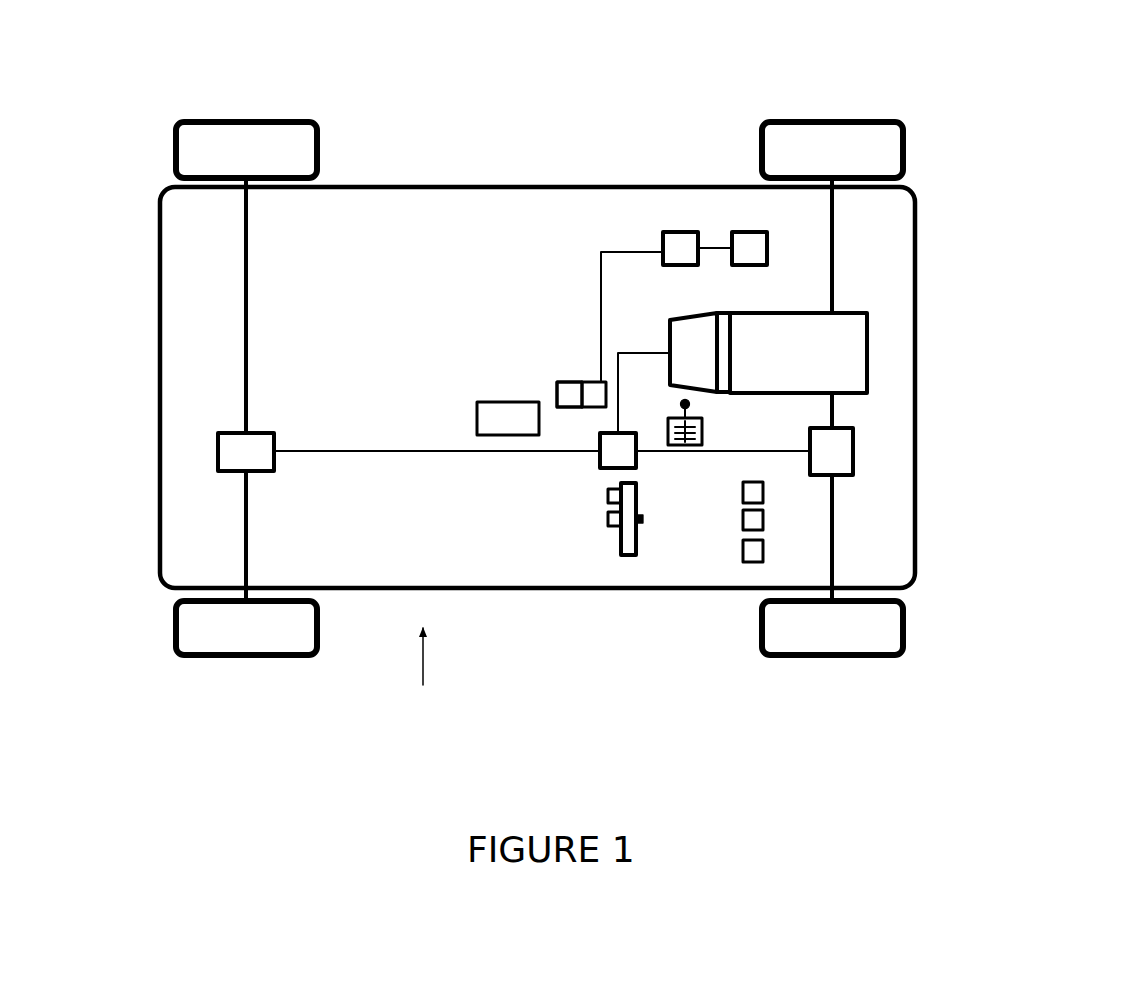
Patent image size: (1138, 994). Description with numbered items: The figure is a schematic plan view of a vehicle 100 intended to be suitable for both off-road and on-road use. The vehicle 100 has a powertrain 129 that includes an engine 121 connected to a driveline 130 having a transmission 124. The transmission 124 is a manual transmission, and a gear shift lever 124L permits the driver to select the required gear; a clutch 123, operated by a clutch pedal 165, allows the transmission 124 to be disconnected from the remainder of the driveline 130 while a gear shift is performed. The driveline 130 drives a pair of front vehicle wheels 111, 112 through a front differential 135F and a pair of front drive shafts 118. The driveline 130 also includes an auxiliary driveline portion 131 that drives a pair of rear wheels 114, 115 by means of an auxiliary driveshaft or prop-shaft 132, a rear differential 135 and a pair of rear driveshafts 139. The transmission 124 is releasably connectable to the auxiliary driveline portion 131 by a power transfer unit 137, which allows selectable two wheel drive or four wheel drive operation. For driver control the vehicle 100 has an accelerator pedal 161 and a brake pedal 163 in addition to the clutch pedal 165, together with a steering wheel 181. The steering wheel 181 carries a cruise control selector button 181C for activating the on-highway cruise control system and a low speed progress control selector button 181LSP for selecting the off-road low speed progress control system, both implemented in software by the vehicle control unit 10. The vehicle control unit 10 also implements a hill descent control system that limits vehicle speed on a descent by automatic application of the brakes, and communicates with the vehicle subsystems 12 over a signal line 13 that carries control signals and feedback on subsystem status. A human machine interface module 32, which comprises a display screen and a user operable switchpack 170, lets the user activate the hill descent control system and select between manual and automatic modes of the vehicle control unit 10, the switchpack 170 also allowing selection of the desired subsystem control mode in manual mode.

The vehicle 100 is at (1012, 147).
The vehicle control unit 10 is at (673, 232).
The vehicle subsystems 12 is at (743, 230).
The signal line 13 is at (717, 247).
The human machine interface module 32 is at (591, 382).
The user operable switchpack 170 is at (568, 382).
The front vehicle wheel 111 is at (880, 133).
The front vehicle wheel 112 is at (880, 645).
The rear wheel 114 is at (207, 133).
The rear wheel 115 is at (208, 643).
The front drive shafts 118 is at (832, 235).
The rear driveshafts 139 is at (246, 290).
The engine 121 is at (857, 357).
The clutch 123 is at (855, 350).
The transmission 124 is at (695, 333).
The gear shift lever 124L is at (837, 423).
The powertrain 129 is at (1012, 372).
The driveline 130 is at (1012, 580).
The auxiliary driveline portion 131 is at (426, 670).
The prop-shaft 132 is at (417, 452).
The rear differential 135 is at (222, 452).
The front differential 135F is at (845, 453).
The power transfer unit 137 is at (568, 499).
The accelerator pedal 161 is at (750, 558).
The brake pedal 163 is at (748, 521).
The clutch pedal 165 is at (748, 492).
The steering wheel 181 is at (630, 550).
The low speed progress control selector button 181LSP is at (543, 601).
The cruise control selector button 181C is at (571, 637).